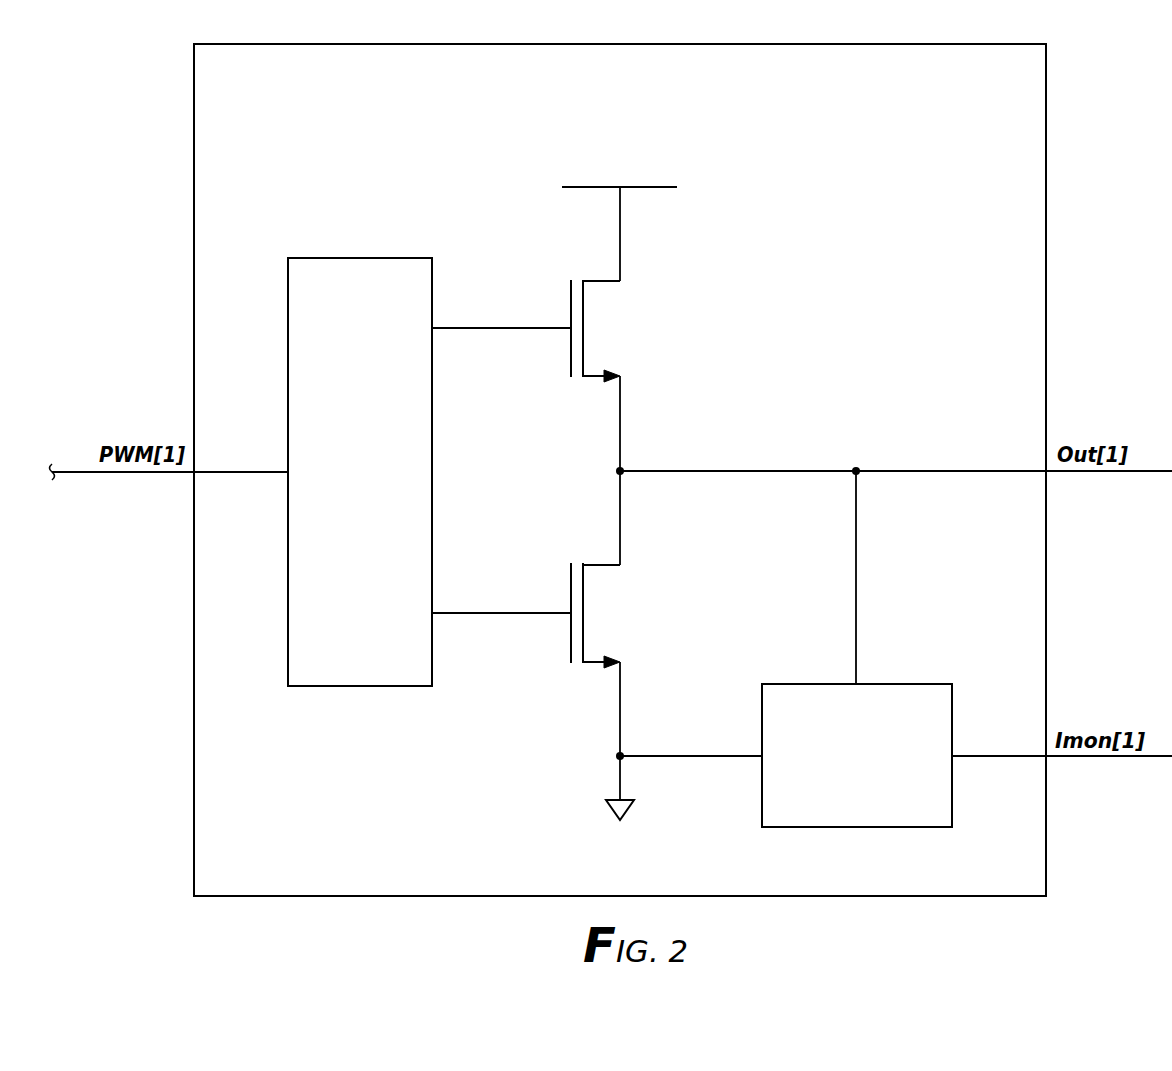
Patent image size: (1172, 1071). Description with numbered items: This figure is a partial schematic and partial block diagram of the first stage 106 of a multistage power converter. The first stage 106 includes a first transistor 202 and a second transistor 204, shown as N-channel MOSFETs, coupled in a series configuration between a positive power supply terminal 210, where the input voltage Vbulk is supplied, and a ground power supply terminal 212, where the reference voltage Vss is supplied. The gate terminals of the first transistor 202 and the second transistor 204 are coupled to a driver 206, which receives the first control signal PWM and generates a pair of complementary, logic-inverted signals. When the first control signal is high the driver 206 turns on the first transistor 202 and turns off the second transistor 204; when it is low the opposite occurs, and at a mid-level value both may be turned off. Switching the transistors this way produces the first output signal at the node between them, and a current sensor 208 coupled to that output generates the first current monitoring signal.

The first stage 106 is at (642, 114).
The first transistor 202 is at (568, 297).
The second transistor 204 is at (568, 578).
The driver 206 is at (381, 501).
The current sensor 208 is at (880, 797).
The positive power supply terminal 210 is at (563, 187).
The ground power supply terminal 212 is at (608, 800).